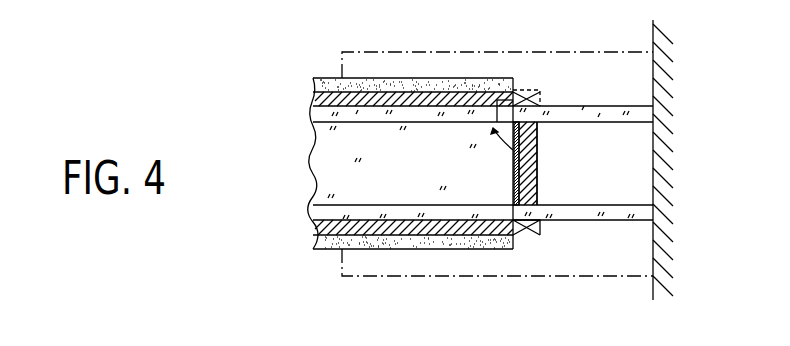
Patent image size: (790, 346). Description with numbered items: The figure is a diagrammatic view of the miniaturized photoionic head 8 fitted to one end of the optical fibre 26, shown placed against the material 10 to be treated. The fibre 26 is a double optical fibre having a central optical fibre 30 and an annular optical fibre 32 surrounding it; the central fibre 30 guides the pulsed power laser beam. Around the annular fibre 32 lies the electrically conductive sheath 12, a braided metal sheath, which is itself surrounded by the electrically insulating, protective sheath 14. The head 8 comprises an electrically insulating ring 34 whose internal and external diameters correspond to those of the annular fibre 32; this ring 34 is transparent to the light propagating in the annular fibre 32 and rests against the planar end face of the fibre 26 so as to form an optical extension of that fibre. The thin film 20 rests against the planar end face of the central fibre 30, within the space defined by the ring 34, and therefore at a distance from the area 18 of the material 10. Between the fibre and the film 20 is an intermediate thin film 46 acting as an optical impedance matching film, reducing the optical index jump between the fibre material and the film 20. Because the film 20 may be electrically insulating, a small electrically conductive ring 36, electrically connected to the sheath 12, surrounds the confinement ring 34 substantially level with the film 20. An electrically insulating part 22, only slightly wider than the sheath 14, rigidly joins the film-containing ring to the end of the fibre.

The photoionic head 8 is at (408, 283).
The material to be treated 10 is at (666, 70).
The electrically conductive sheath 12 is at (316, 98).
The electrically insulating sheath 14 is at (328, 84).
The area of the material to be treated 18 is at (654, 169).
The thin film 20 is at (538, 140).
The electrically insulating part 22 is at (557, 276).
The optical fibre 26 is at (300, 226).
The central optical fibre 30 is at (315, 162).
The annular optical fibre 32 is at (317, 210).
The electrically insulating ring 34 is at (644, 116).
The electrically conductive ring 36 is at (540, 98).
The intermediate thin film 46 is at (508, 96).